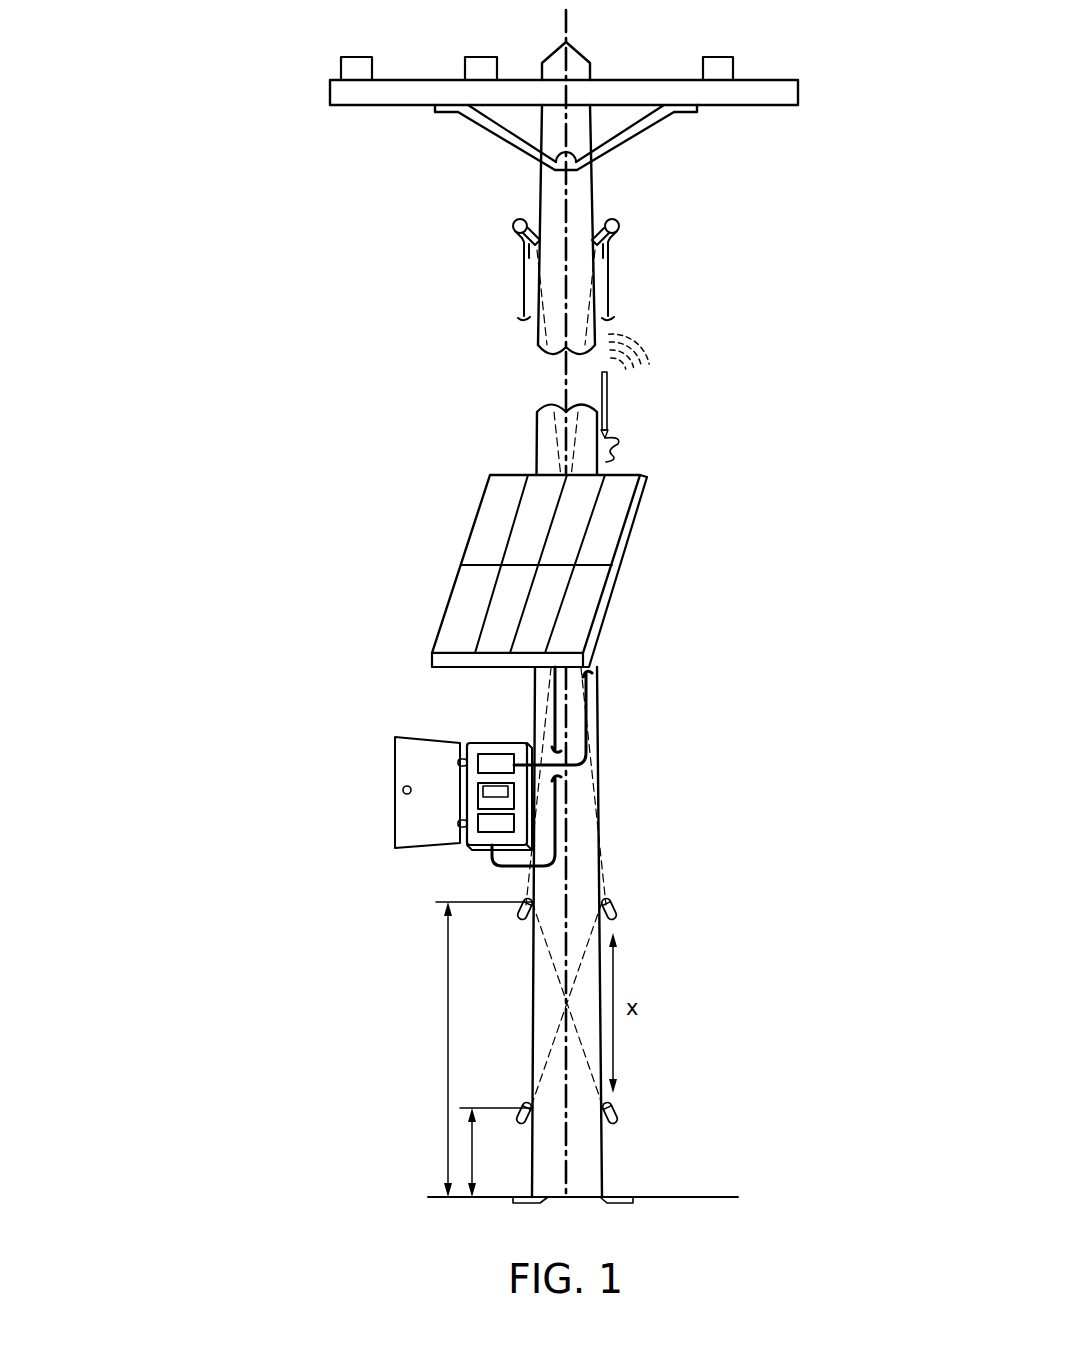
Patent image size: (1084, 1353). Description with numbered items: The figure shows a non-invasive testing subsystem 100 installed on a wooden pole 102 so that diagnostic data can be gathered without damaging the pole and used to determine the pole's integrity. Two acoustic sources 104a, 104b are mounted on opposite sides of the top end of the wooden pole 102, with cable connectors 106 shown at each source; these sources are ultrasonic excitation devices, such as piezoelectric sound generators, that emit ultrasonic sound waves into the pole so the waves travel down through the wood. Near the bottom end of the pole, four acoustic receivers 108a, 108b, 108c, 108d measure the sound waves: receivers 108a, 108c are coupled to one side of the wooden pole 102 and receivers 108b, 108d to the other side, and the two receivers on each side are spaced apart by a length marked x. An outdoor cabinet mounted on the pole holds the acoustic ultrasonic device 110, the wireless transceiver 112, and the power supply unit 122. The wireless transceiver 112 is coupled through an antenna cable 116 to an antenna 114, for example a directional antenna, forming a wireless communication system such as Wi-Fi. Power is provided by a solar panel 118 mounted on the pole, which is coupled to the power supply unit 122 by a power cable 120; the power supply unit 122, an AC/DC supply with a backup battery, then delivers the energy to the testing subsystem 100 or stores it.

The non-invasive testing subsystem 100 is at (248, 213).
The wooden pole 102 is at (537, 441).
The acoustic source 104a is at (619, 222).
The acoustic source 104b is at (514, 228).
The cable connectors 106 is at (524, 282).
The acoustic receiver 108a is at (655, 896).
The acoustic receiver 108b is at (521, 918).
The acoustic receiver 108c is at (620, 1122).
The acoustic receiver 108d is at (518, 1114).
The acoustic ultrasonic device 110 is at (478, 795).
The wireless transceiver 112 is at (496, 753).
The antenna 114 is at (607, 400).
The antenna cable 116 is at (591, 681).
The solar panel 118 is at (474, 525).
The power cable 120 is at (557, 806).
The power supply unit 122 is at (492, 850).